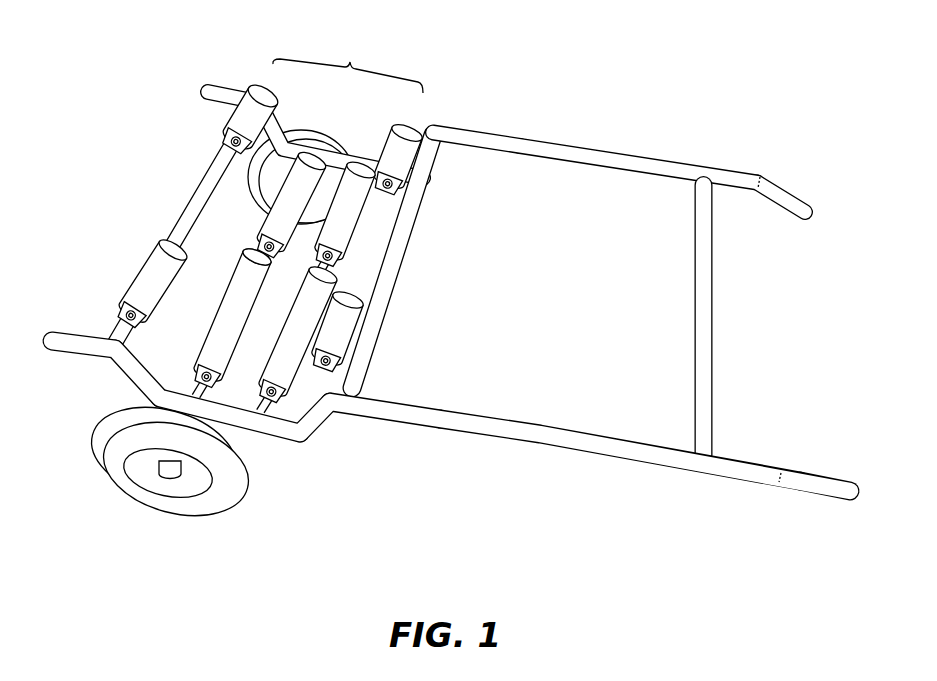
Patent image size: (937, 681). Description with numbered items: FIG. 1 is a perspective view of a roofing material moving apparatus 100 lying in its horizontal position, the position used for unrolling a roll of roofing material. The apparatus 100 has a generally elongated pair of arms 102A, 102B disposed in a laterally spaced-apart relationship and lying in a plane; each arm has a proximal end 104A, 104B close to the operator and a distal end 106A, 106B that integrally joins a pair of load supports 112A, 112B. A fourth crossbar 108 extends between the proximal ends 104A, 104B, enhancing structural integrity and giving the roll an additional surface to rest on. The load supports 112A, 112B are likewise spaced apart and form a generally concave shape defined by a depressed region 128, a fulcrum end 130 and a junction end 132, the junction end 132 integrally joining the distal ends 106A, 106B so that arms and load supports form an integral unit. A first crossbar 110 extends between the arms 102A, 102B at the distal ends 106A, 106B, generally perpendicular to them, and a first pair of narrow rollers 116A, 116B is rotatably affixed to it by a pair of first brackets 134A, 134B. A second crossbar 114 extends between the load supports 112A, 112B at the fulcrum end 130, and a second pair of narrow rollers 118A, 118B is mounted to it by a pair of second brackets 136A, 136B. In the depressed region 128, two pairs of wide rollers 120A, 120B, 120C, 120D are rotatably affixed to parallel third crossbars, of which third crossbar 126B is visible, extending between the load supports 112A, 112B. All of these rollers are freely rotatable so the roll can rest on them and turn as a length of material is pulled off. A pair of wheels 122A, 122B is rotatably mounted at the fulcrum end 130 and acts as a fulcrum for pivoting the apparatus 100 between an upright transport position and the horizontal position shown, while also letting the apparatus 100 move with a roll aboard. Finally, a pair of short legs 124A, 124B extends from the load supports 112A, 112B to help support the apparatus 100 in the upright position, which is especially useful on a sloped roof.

The roofing material moving apparatus 100 is at (136, 55).
The arm 102A is at (622, 160).
The arm 102B is at (630, 452).
The proximal end 104A is at (797, 203).
The proximal end 104B is at (818, 483).
The distal end 106A is at (498, 143).
The distal end 106B is at (403, 412).
The fourth crossbar 108 is at (710, 300).
The first crossbar 110 is at (397, 250).
The load support 112A is at (362, 156).
The load support 112B is at (257, 422).
The second crossbar 114 is at (183, 207).
The first narrow roller 116A is at (403, 148).
The first narrow roller 116B is at (338, 320).
The second narrow roller 118A is at (242, 123).
The second narrow roller 118B is at (150, 267).
The wide roller 120A is at (350, 198).
The wide roller 120B is at (268, 356).
The wide roller 120C is at (268, 226).
The wide roller 120D is at (237, 322).
The wheel 122A is at (262, 186).
The wheel 122B is at (217, 497).
The short leg 124A is at (230, 92).
The short leg 124B is at (68, 334).
The third crossbar 126B is at (253, 255).
The depressed region 128 is at (348, 66).
The fulcrum end 130 is at (140, 387).
The junction end 132 is at (310, 413).
The first bracket 134A is at (387, 190).
The first bracket 134B is at (342, 373).
The second bracket 136A is at (227, 135).
The second bracket 136B is at (128, 303).